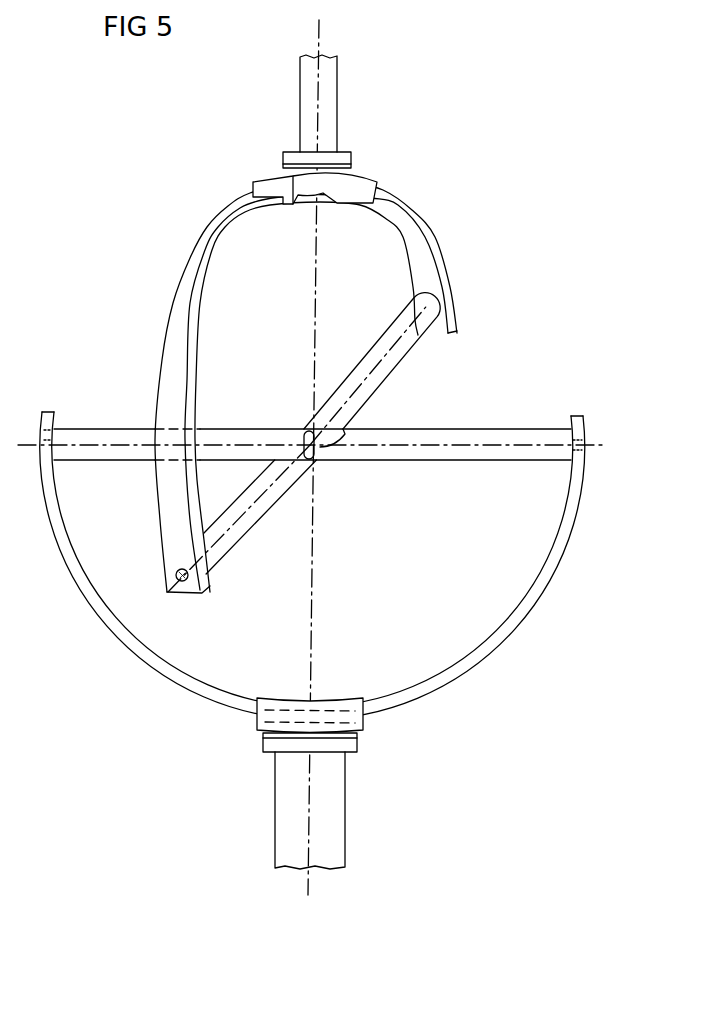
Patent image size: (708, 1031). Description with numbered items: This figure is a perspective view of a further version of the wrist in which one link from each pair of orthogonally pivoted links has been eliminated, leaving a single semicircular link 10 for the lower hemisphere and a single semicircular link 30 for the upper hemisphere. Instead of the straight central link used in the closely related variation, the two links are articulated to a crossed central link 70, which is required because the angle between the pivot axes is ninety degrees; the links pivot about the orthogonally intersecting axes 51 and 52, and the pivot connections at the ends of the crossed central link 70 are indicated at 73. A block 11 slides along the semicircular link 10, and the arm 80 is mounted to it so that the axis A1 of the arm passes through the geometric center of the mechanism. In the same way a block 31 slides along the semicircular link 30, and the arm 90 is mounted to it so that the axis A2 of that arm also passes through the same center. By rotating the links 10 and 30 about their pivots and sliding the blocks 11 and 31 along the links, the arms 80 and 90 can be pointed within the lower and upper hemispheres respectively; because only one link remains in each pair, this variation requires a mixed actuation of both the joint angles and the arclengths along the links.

The semicircular link 10 is at (498, 636).
The block 11 is at (351, 727).
The semicircular link 30 is at (188, 303).
The block 31 is at (352, 190).
The axis 51 is at (236, 444).
The axis 52 is at (364, 383).
The crossed central link 70 is at (376, 453).
The pin 73 is at (177, 573).
The arm 80 is at (331, 848).
The arm 90 is at (327, 84).
The axis of the arm A1 is at (313, 551).
The axis of the arm A2 is at (318, 297).